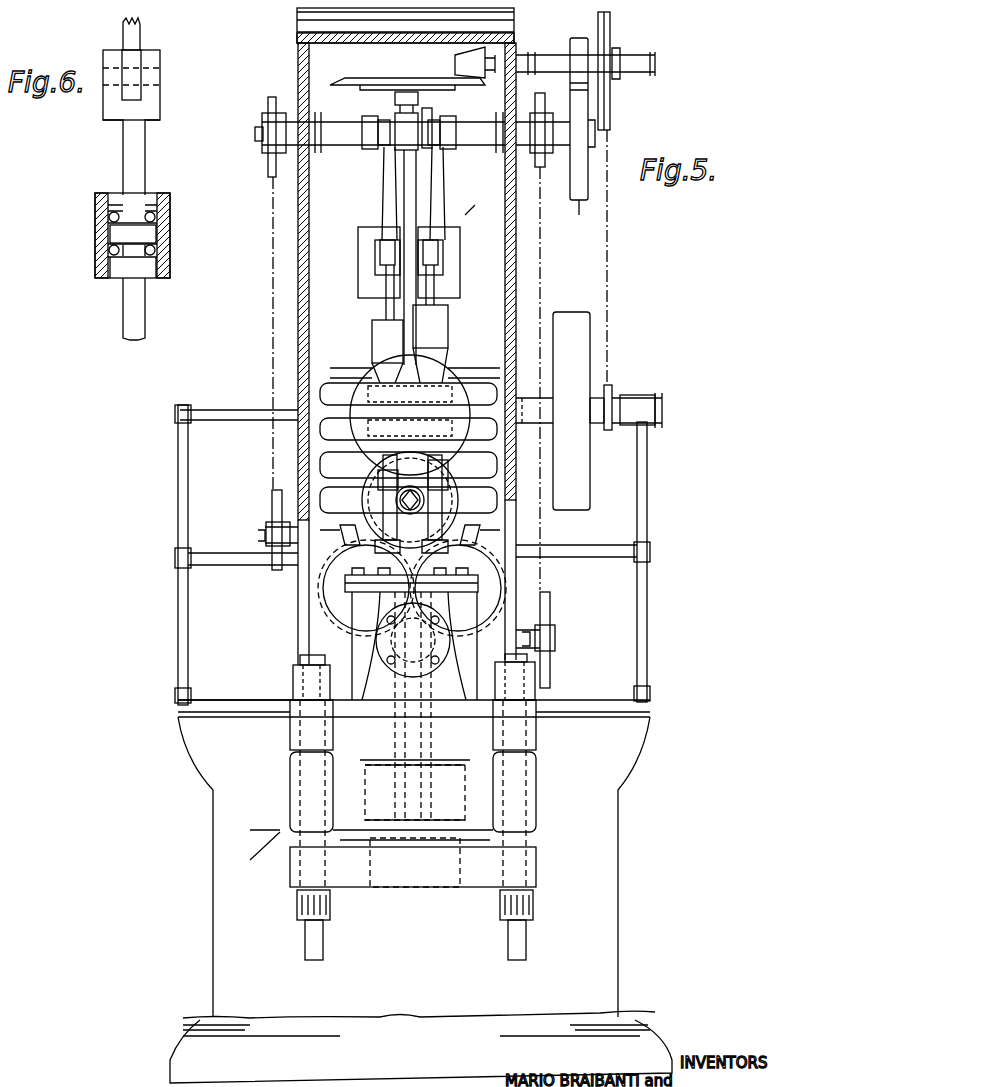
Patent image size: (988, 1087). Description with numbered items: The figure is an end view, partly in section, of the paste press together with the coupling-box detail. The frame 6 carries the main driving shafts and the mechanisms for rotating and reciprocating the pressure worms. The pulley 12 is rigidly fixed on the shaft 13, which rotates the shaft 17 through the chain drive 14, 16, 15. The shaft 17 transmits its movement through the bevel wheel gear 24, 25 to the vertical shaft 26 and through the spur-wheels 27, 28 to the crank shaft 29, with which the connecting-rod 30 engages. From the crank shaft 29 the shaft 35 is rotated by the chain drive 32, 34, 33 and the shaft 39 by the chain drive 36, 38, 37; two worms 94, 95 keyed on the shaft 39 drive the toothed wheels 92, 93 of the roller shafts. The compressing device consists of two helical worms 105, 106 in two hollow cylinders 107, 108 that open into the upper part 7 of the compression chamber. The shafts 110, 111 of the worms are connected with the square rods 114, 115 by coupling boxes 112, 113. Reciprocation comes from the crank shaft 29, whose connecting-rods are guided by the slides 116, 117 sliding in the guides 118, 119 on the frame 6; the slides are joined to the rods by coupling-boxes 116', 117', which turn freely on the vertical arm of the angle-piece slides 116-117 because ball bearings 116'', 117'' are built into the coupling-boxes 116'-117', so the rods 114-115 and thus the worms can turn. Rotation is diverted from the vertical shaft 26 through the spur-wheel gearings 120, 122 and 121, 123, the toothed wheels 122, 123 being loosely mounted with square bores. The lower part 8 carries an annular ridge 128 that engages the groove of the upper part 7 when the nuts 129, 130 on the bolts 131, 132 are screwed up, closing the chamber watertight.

In FIG. 5, the frame 6 is at (310, 195).
In FIG. 5, the upper part of compression chamber 7 is at (292, 734).
In FIG. 5, the lower part of compression chamber 8 is at (292, 868).
In FIG. 5, the pulley 12 is at (583, 318).
In FIG. 5, the shaft 13 is at (661, 400).
In FIG. 5, the chain drive sprocket 14 is at (612, 390).
In FIG. 5, the chain drive sprocket 15 is at (612, 118).
In FIG. 5, the chain 16 is at (610, 240).
In FIG. 5, the shaft 17 is at (656, 63).
In FIG. 5, the bevel wheel 24 is at (455, 62).
In FIG. 5, the bevel wheel 25 is at (368, 84).
In FIG. 5, the vertical shaft 26 is at (400, 108).
In FIG. 5, the spur-wheel 27 is at (578, 42).
In FIG. 5, the spur-wheel 28 is at (580, 203).
In FIG. 5, the crank shaft 29 is at (255, 128).
In FIG. 5, the connecting-rod 30 is at (386, 152).
In FIG. 5, the chain drive sprocket 32 is at (540, 166).
In FIG. 5, the chain drive sprocket 33 is at (551, 612).
In FIG. 5, the chain 34 is at (545, 574).
In FIG. 5, the shaft 35 is at (555, 633).
In FIG. 5, the chain drive sprocket 36 is at (270, 98).
In FIG. 5, the chain drive sprocket 37 is at (435, 108).
In FIG. 5, the chain 38 is at (273, 317).
In FIG. 5, the shaft 39 is at (270, 510).
In FIG. 5, the toothed wheel 92 is at (340, 606).
In FIG. 5, the toothed wheel 93 is at (470, 622).
In FIG. 5, the worm 94 is at (360, 507).
In FIG. 5, the worm 95 is at (442, 522).
In FIG. 5, the helical worm 105 is at (370, 705).
In FIG. 5, the helical worm 106 is at (540, 742).
In FIG. 5, the hollow cylinder 107 is at (390, 730).
In FIG. 5, the hollow cylinder 108 is at (440, 763).
In FIG. 5, the worm shaft 110 is at (390, 497).
In FIG. 5, the worm shaft 111 is at (442, 497).
In FIG. 5, the coupling box 112 is at (380, 478).
In FIG. 5, the coupling box 113 is at (448, 478).
In FIG. 5, the rod 114 is at (392, 362).
In FIG. 5, the rod 115 is at (446, 355).
In FIG. 5, the slide 116 is at (356, 280).
In FIG. 5, the slide 117 is at (463, 222).
In FIG. 5, the guide 118 is at (372, 244).
In FIG. 5, the guide 119 is at (446, 279).
In FIG. 5, the coupling-box 116' is at (361, 336).
In FIG. 5, the coupling-box 117' is at (459, 326).
In FIG. 5, the spur-wheel 120 is at (375, 385).
In FIG. 5, the spur-wheel 121 is at (516, 436).
In FIG. 5, the toothed wheel 122 is at (375, 417).
In FIG. 5, the toothed wheel 123 is at (430, 432).
In FIG. 5, the annular ridge 128 is at (330, 830).
In FIG. 5, the nut 129 is at (331, 912).
In FIG. 5, the nut 130 is at (534, 912).
In FIG. 5, the bolt 131 is at (318, 946).
In FIG. 5, the bolt 132 is at (527, 946).
In FIG. 6, the slides 116-117 is at (137, 146).
In FIG. 6, the coupling-boxes 116'-117' is at (173, 231).
In FIG. 6, the ball bearing 116'' is at (167, 217).
In FIG. 6, the ball bearing 117'' is at (169, 251).
In FIG. 6, the rods 114-115 is at (140, 305).